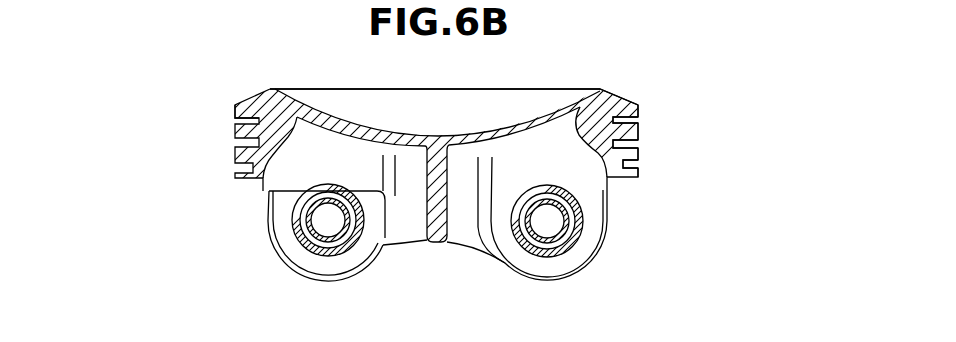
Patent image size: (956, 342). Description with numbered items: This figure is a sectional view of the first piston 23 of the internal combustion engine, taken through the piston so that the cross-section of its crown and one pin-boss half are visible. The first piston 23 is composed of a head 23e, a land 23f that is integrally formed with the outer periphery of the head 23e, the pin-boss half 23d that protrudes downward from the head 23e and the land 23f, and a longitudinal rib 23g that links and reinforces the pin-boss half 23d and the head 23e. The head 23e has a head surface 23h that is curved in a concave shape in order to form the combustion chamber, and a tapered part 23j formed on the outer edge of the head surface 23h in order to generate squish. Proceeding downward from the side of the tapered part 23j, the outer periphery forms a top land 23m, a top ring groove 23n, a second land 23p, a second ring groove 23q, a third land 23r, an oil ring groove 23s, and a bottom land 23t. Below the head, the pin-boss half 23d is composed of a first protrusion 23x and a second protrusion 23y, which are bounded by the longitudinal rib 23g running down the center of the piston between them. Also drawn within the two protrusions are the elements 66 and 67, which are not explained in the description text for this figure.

The first piston 23 is at (258, 93).
The pin-boss half 23d is at (263, 203).
The head 23e is at (358, 118).
The land 23f is at (232, 108).
The longitudinal rib 23g is at (438, 240).
The head surface 23h is at (502, 118).
The tapered part 23j is at (600, 93).
The top land 23m is at (639, 110).
The top ring groove 23n is at (639, 124).
The second land 23p is at (639, 135).
The second ring groove 23q is at (639, 145).
The third land 23r is at (639, 154).
The oil ring groove 23s is at (634, 162).
The bottom land 23t is at (638, 172).
The first protrusion 23x is at (593, 227).
The second protrusion 23y is at (280, 230).
The right pin bearing 66 is at (577, 236).
The left pin bearing 67 is at (308, 245).